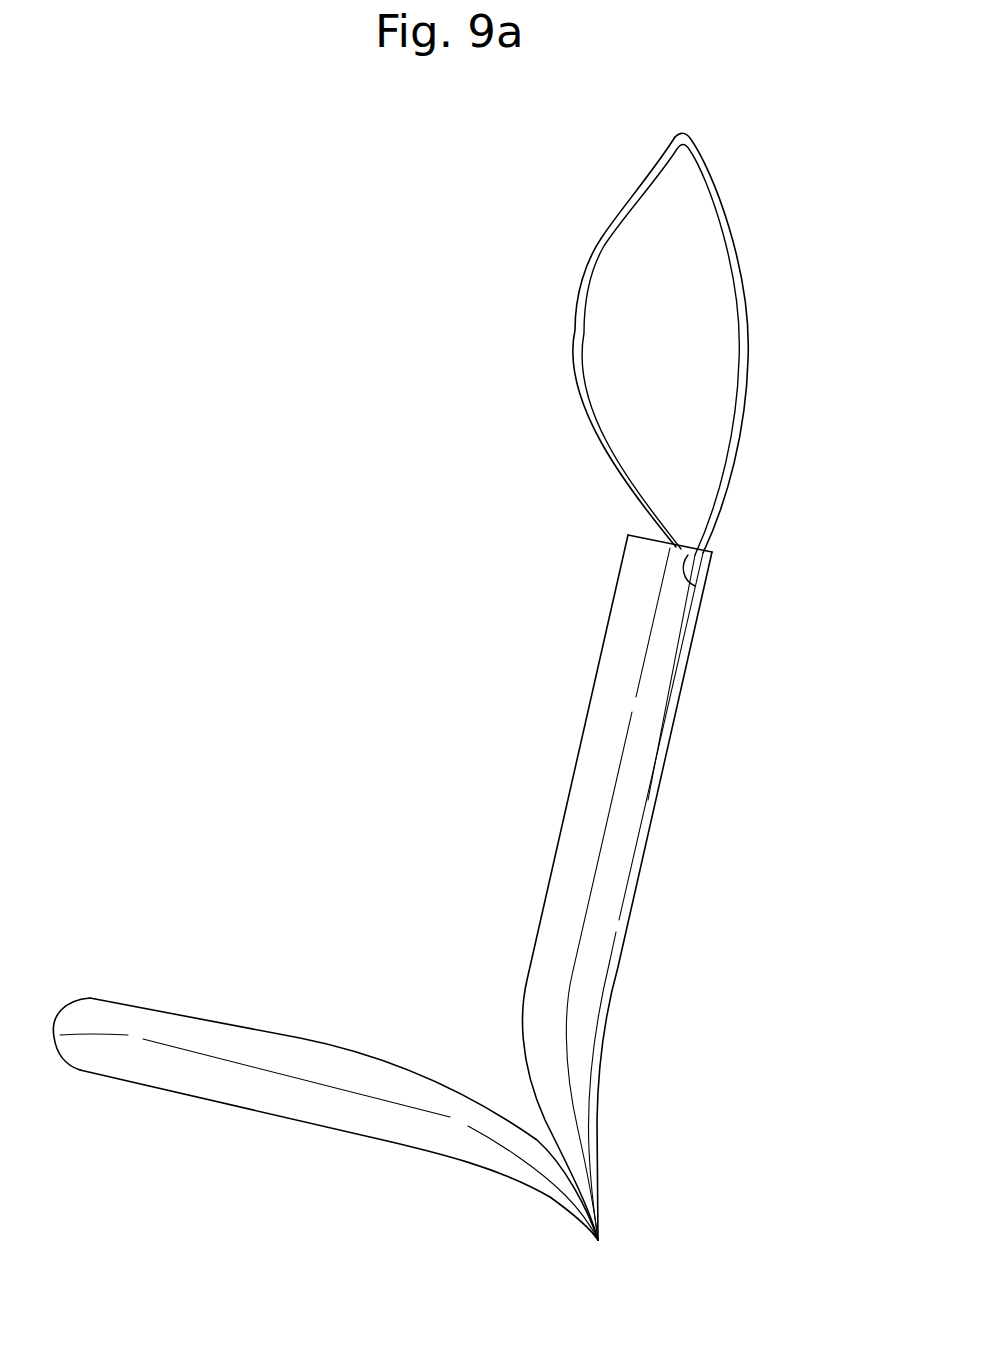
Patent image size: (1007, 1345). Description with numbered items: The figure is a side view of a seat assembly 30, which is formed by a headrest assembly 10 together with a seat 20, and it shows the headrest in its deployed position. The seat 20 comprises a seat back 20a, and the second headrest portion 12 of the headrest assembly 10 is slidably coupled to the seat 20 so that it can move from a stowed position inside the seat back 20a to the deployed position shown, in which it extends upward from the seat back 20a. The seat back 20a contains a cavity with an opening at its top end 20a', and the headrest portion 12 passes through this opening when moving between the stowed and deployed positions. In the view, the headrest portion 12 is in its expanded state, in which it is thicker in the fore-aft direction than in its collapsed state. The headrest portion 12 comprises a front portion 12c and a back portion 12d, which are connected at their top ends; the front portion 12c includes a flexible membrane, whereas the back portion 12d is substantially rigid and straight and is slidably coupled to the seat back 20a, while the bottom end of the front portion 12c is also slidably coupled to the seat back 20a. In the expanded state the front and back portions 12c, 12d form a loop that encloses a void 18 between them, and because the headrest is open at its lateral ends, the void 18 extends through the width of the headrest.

The headrest assembly 10 is at (775, 212).
The second headrest portion 12 is at (747, 357).
The front portion 12c is at (575, 305).
The back portion 12d is at (707, 163).
The void 18 is at (632, 237).
The seat 20 is at (625, 840).
The seat back 20a is at (684, 896).
The top end of the seat back 20a' is at (744, 589).
The seat assembly 30 is at (462, 656).